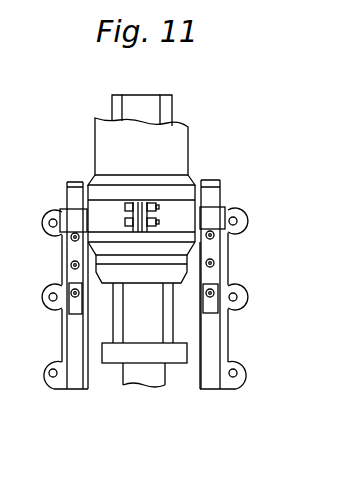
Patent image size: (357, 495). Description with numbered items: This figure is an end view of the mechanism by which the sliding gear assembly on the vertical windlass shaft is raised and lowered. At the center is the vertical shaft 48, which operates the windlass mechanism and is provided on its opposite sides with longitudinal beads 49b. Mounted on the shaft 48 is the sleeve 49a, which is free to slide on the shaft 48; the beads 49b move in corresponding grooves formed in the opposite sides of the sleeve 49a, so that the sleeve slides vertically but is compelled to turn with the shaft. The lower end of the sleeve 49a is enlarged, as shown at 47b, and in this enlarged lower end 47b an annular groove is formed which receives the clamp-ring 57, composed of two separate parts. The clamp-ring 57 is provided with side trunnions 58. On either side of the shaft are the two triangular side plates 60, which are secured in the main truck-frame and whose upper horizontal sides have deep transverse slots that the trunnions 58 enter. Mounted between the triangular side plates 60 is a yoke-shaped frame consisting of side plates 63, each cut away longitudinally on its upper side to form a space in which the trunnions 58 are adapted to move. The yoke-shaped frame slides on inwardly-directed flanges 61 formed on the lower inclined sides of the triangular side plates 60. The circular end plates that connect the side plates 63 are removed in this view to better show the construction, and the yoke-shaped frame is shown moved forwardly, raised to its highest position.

The shaft 48 is at (141, 104).
The sleeve 49a is at (141, 146).
The longitudinal beads 49b is at (112, 102).
The enlarged lower end of sleeve 47b is at (183, 185).
The clamp-ring 57 is at (155, 217).
The side trunnions 58 is at (63, 208).
The triangular side plates 60 is at (58, 330).
The inwardly-directed flanges 61 is at (82, 382).
The side plates of yoke-shaped frame 63 is at (73, 252).